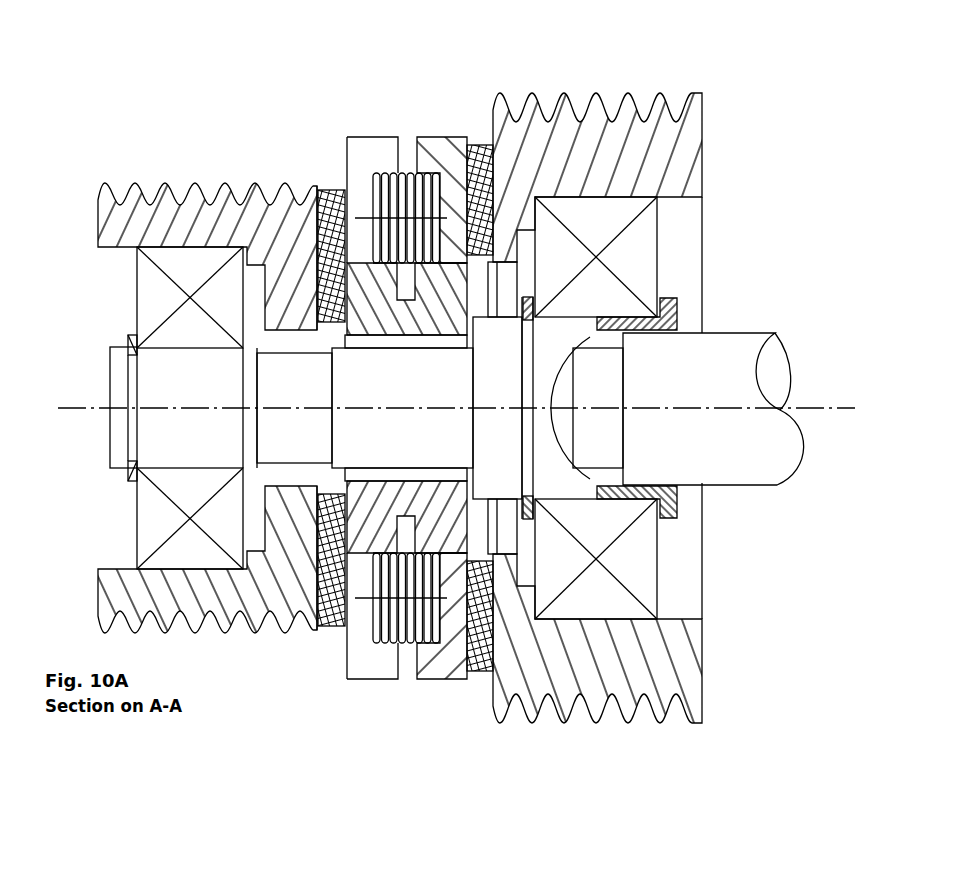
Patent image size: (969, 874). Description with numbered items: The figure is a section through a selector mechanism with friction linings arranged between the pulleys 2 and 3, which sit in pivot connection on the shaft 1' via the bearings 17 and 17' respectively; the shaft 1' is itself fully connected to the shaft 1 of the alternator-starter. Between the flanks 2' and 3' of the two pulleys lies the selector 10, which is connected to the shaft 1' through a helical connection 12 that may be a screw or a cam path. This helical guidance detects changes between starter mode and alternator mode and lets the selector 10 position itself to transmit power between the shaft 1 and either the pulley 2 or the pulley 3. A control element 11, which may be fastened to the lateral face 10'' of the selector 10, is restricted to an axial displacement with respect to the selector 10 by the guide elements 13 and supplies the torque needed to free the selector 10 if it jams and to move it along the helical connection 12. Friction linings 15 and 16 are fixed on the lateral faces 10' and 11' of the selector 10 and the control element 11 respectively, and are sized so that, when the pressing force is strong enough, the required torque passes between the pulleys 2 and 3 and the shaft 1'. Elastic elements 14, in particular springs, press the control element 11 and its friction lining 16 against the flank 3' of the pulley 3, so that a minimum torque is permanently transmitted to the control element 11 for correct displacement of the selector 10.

The shaft 1 is at (730, 441).
The shaft 1' is at (677, 461).
The pulley 2 is at (207, 336).
The flank 2' is at (287, 379).
The pulley 3 is at (587, 382).
The flank 3' is at (477, 310).
The selector 10 is at (371, 359).
The lateral face 10' is at (302, 279).
The lateral face 10'' is at (370, 385).
The control element 11 is at (509, 538).
The lateral face 11' is at (442, 388).
The helical connection 12 is at (383, 560).
The guide elements 13 is at (425, 585).
The elastic element 14 is at (432, 313).
The friction lining 15 is at (322, 598).
The friction lining 16 is at (468, 620).
The bearing 17 is at (169, 304).
The bearing 17' is at (692, 408).